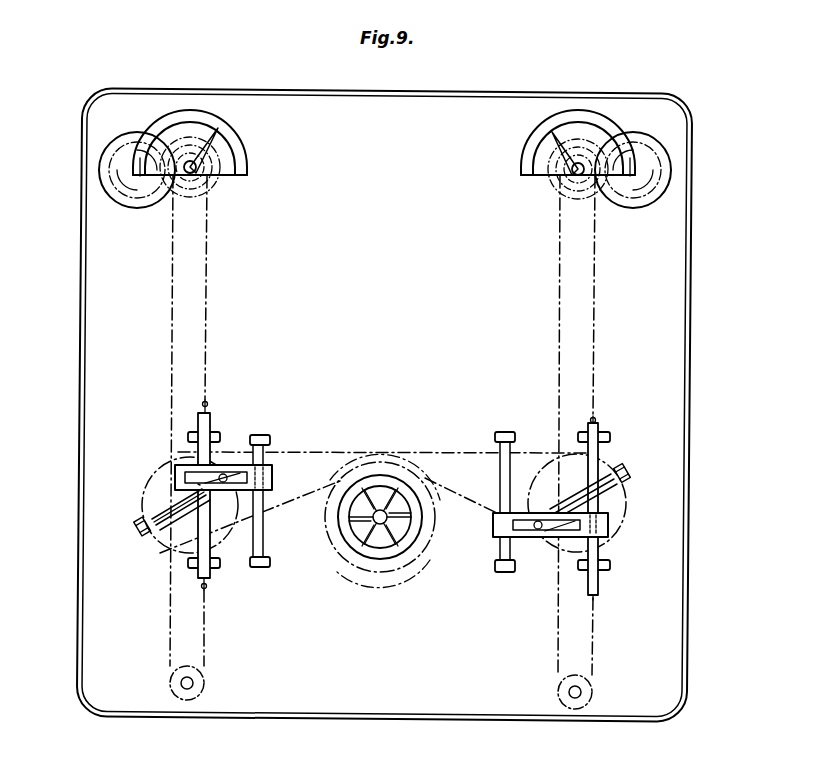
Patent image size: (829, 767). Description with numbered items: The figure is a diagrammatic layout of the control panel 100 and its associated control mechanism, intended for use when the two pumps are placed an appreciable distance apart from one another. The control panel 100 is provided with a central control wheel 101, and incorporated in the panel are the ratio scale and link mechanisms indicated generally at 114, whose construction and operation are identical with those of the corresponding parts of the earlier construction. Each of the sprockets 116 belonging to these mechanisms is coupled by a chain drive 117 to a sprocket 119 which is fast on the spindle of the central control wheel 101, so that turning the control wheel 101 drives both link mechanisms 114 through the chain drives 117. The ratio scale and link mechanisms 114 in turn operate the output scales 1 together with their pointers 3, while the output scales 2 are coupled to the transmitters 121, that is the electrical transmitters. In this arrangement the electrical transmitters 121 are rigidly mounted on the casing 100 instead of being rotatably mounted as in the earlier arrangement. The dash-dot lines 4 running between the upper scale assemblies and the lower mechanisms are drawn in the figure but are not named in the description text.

The output scale 1 is at (236, 138).
The output scale 2 is at (546, 126).
The pointer 3 is at (202, 172).
The strand / belt 4 is at (211, 304).
The control panel 100 is at (400, 693).
The central control wheel 101 is at (380, 550).
The ratio scale and link mechanism 114 is at (150, 542).
The sprocket 116 is at (152, 474).
The chain drive 117 is at (355, 451).
The sprocket 119 is at (437, 527).
The transmitter 121 is at (135, 152).